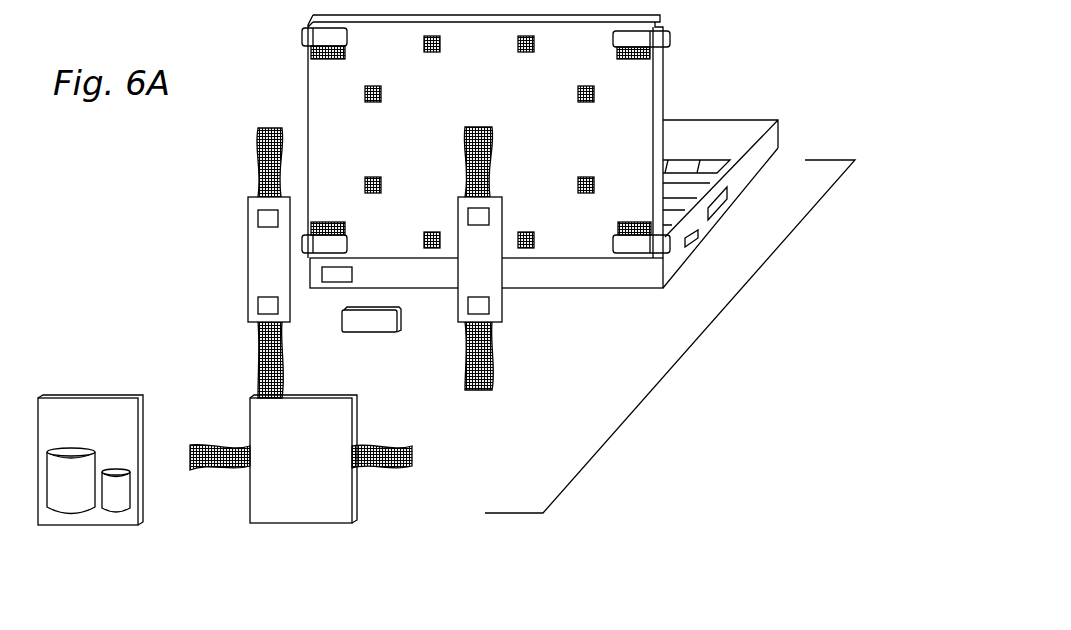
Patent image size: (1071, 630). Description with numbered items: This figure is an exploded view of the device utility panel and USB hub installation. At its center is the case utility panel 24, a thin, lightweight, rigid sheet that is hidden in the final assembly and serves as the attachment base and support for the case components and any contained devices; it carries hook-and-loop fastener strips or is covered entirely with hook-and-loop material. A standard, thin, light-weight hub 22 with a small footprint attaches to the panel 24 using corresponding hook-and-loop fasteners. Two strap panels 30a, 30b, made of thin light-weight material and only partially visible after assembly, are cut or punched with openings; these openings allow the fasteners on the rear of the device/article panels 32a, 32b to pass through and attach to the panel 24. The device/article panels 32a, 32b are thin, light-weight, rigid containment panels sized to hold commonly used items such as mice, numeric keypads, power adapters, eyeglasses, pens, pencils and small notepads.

The case utility panel 24 is at (342, 103).
The hub 22 is at (398, 333).
The panel 30a is at (241, 272).
The panel 30b is at (508, 315).
The device/article panel 32a is at (86, 388).
The device/article panel 32b is at (239, 417).